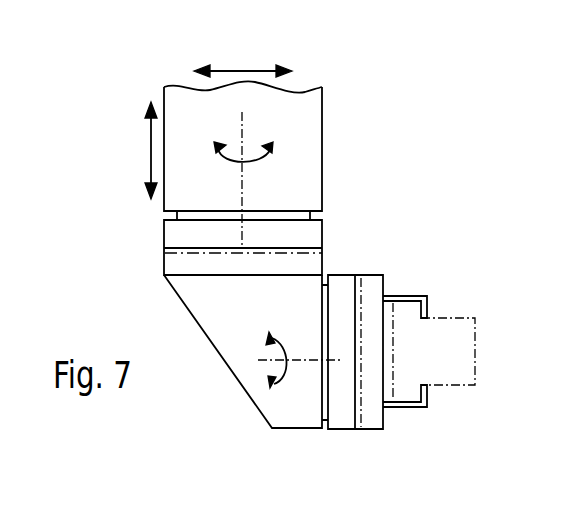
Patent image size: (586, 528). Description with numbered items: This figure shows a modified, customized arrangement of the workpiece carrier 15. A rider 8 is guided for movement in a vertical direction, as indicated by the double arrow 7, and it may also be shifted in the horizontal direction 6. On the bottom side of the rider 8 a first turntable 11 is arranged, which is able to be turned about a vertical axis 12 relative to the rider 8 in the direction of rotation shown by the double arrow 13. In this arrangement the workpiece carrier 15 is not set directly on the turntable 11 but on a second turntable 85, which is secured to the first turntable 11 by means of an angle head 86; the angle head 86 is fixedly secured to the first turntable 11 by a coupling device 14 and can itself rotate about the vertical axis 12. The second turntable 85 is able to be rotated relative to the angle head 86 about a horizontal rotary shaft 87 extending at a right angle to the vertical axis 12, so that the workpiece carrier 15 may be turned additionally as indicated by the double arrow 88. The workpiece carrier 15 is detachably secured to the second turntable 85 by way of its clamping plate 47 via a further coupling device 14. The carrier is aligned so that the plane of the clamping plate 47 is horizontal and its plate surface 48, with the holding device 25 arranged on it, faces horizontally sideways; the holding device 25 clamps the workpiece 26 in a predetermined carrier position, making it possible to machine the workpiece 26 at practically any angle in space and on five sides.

The direction 6 is at (242, 71).
The double arrow 7 is at (148, 148).
The rider 8 is at (315, 105).
The turntable 11 is at (172, 232).
The vertical axis 12 is at (242, 118).
The double arrow 13 is at (270, 151).
The coupling device 14 is at (150, 255).
The workpiece carrier 15 is at (378, 440).
The holding device 25 is at (430, 421).
The workpiece 26 is at (464, 318).
The clamping plate 47 is at (369, 283).
The plate surface 48 is at (394, 276).
The second turntable 85 is at (343, 428).
The angle head 86 is at (212, 322).
The horizontal rotary shaft 87 is at (258, 381).
The double arrow 88 is at (278, 340).